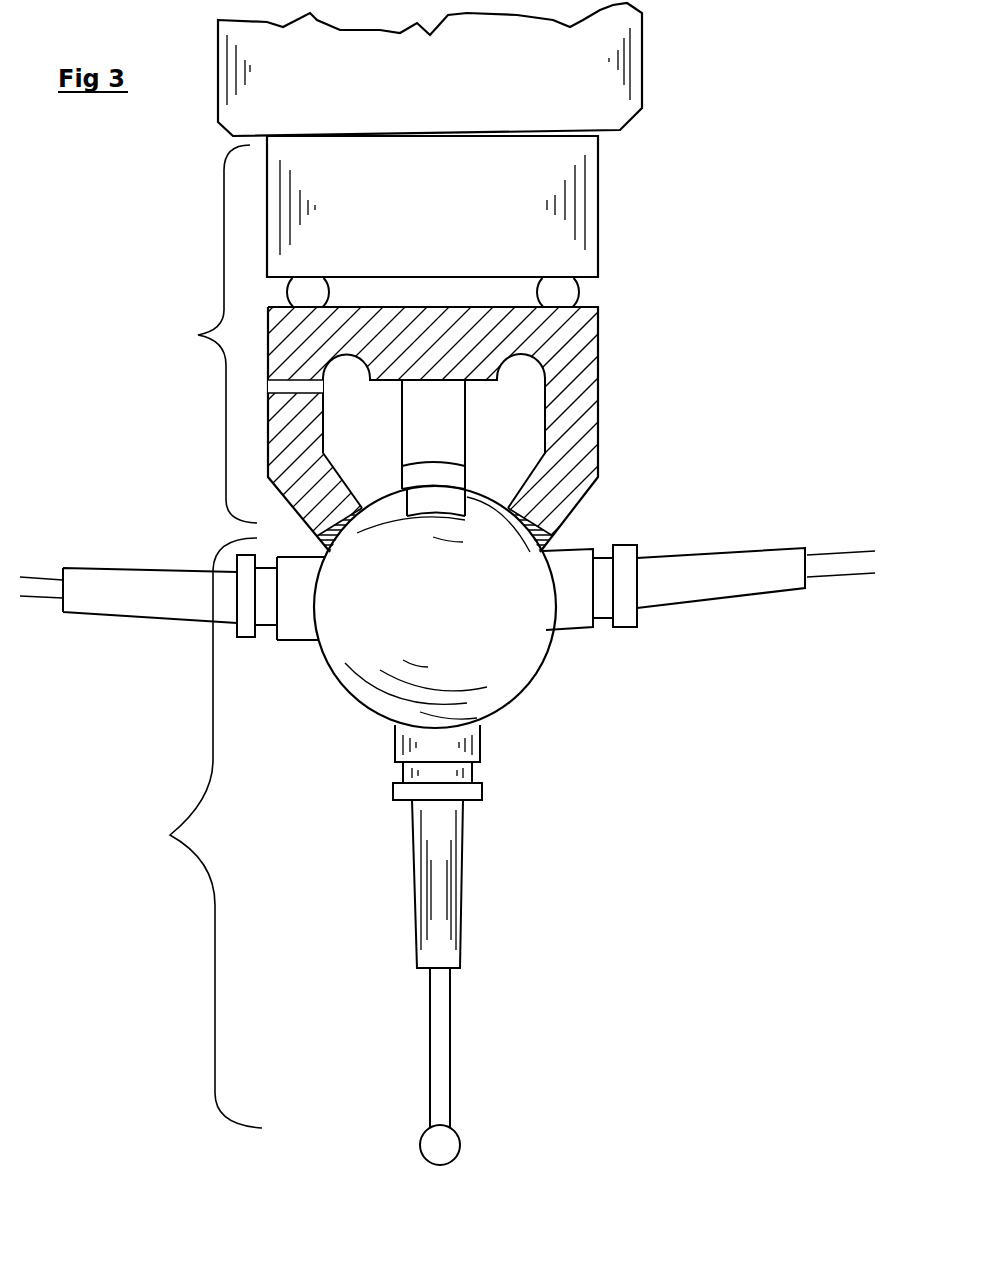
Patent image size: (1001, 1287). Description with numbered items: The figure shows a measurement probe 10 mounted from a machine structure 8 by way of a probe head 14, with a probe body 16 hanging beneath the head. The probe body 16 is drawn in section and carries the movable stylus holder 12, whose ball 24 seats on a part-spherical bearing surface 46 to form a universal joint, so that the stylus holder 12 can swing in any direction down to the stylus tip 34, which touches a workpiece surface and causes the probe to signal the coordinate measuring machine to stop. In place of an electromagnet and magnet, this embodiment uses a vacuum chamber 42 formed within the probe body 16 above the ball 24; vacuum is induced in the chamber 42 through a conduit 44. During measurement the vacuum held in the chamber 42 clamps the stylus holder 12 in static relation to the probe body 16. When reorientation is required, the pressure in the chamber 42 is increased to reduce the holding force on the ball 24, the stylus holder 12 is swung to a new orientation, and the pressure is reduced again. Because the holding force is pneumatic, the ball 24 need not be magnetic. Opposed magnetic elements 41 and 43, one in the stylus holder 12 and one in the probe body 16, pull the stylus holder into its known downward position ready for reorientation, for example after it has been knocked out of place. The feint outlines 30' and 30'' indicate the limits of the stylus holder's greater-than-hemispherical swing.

The machine arm / quill 8 is at (396, 112).
The probe head 14 is at (432, 252).
The probe 10 is at (198, 335).
The stylus holder 12 is at (170, 835).
The probe body 16 is at (421, 433).
The conduit 44 is at (268, 387).
The vacuum chamber 42 is at (520, 441).
The magnetic element 43 is at (402, 470).
The magnetic element 41 is at (407, 512).
The part-spherical bearing surface 46 is at (352, 530).
The ball 24 is at (530, 663).
The feint outline 30' is at (709, 587).
The feint outline 30'' is at (172, 597).
The stylus tip 34 is at (457, 1147).